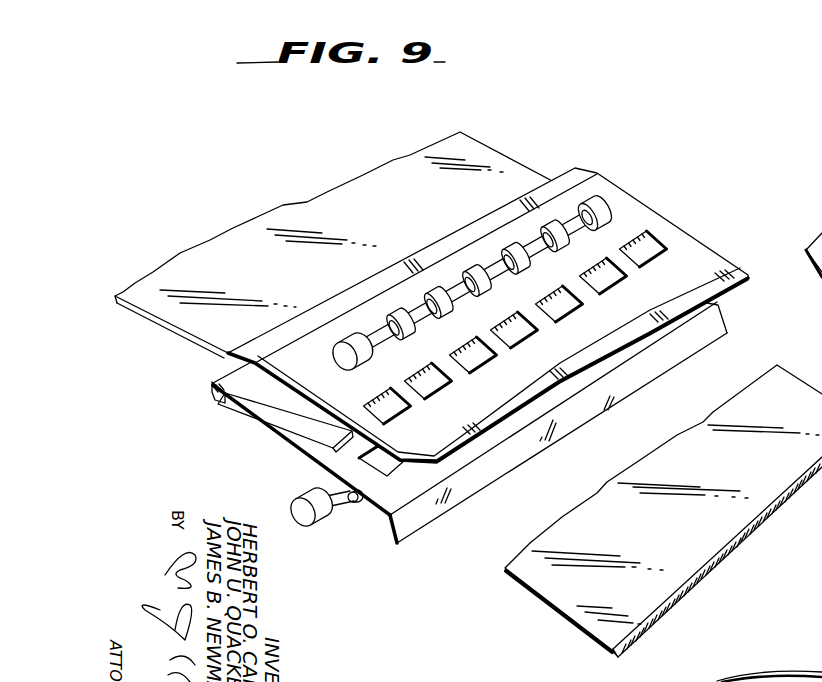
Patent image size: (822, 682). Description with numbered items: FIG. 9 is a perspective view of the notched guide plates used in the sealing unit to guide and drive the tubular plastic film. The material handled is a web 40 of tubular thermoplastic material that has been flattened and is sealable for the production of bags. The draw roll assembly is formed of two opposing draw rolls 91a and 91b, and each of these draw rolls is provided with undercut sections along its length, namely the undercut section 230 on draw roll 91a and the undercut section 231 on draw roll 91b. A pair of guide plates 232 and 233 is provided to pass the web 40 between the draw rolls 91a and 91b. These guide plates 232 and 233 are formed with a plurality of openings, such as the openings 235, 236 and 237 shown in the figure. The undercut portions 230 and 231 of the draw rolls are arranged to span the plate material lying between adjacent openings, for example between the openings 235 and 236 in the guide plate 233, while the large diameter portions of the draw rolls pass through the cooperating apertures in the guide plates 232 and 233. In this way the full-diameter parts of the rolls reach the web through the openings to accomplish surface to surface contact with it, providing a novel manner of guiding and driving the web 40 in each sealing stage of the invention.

The web 40 is at (568, 600).
The draw roll 91a is at (305, 495).
The draw roll 91b is at (336, 355).
The undercut section 230 is at (352, 506).
The undercut section 231 is at (452, 284).
The guide plate 232 is at (469, 422).
The guide plate 233 is at (497, 315).
The opening 235 is at (388, 413).
The opening 236 is at (433, 388).
The opening 237 is at (386, 467).